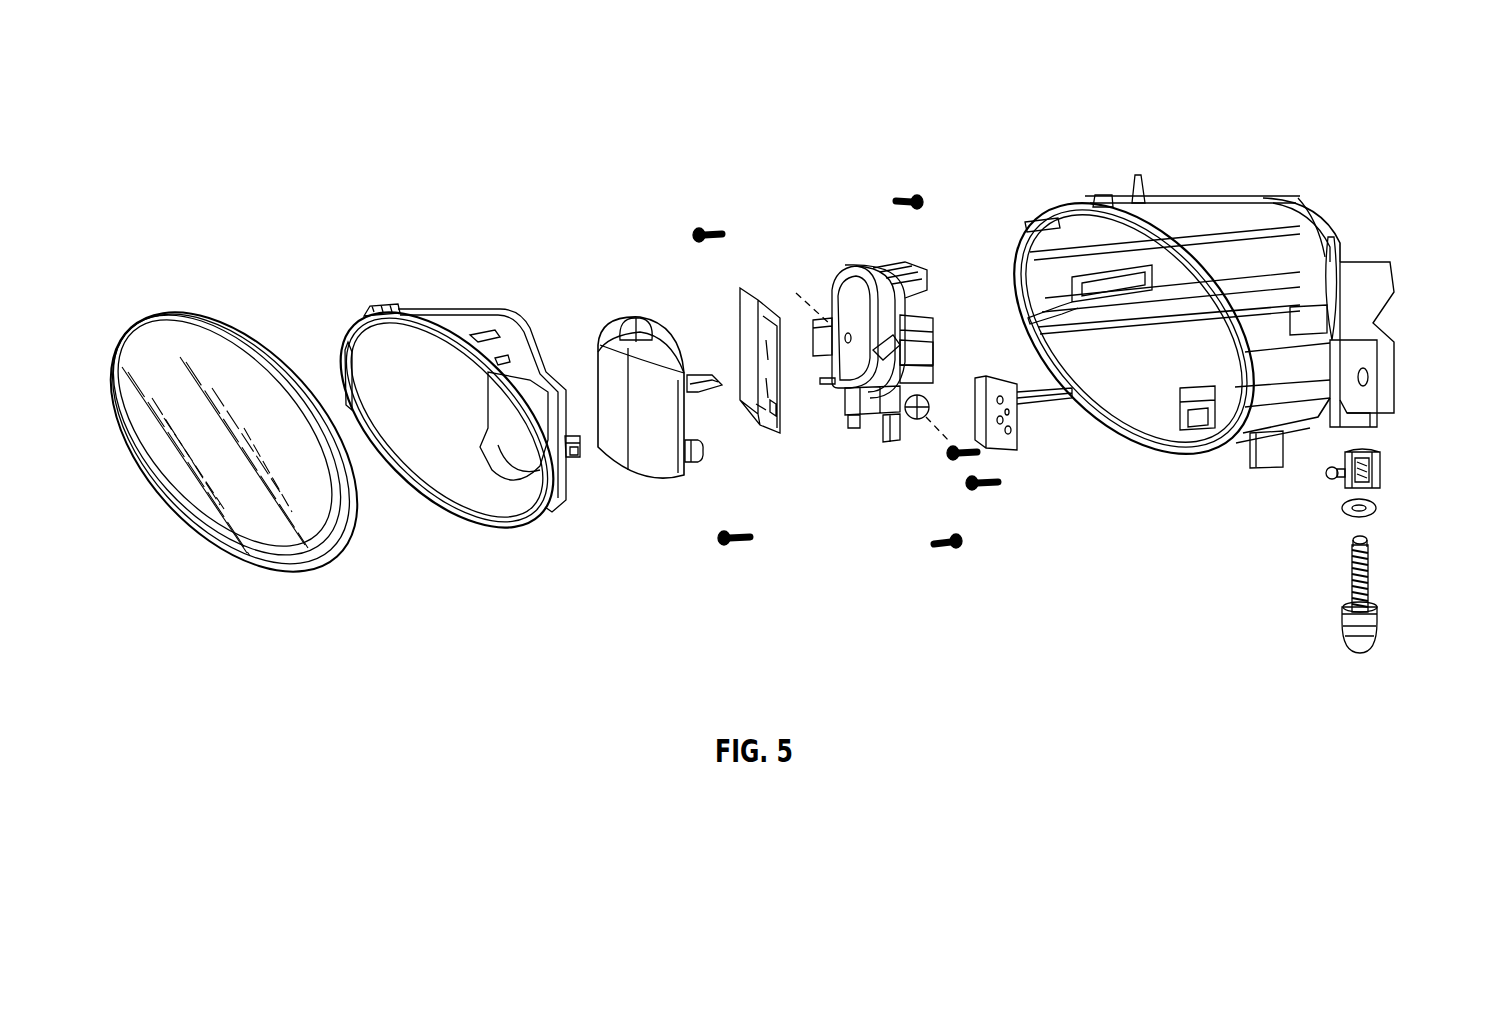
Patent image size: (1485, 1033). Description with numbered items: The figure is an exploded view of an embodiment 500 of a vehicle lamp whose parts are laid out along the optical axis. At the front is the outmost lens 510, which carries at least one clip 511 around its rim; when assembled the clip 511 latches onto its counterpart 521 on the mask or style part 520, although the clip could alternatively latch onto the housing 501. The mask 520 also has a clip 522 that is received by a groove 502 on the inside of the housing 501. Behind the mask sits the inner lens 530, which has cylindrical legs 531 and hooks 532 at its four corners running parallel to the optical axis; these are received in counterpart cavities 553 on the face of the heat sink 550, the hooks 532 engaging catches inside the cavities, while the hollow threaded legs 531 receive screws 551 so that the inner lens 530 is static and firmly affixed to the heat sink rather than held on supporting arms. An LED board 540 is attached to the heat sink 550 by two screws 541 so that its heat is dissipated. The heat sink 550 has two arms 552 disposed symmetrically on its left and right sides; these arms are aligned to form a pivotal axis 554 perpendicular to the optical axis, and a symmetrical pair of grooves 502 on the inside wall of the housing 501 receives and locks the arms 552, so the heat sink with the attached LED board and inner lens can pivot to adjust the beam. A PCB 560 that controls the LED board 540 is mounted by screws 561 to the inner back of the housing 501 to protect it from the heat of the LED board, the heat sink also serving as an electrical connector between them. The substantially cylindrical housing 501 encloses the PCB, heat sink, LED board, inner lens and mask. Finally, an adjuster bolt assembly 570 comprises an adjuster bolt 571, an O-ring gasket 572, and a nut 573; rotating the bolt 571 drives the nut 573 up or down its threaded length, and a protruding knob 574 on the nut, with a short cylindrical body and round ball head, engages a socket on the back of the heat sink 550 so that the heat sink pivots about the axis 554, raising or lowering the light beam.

The embodiment 500 is at (253, 97).
The housing 501 is at (1202, 192).
The groove 502 is at (1105, 292).
The outmost lens 510 is at (160, 485).
The clip 511 is at (176, 318).
The mask or style part 520 is at (462, 315).
The counterpart 521 is at (378, 304).
The clip 522 is at (576, 462).
The inner lens 530 is at (606, 324).
The cylindrical legs 531 is at (646, 328).
The hooks 532 is at (698, 373).
The LED board 540 is at (752, 290).
The screws 541 is at (714, 232).
The heat sink 550 is at (866, 422).
The screws 551 is at (910, 200).
The arms 552 is at (930, 362).
The cavities 553 is at (880, 348).
The pivotal axis 554 is at (803, 296).
The PCB 560 is at (1040, 410).
The screws 561 is at (996, 492).
The adjuster bolt assembly 570 is at (1348, 570).
The adjuster bolt 571 is at (1380, 640).
The O-ring gasket 572 is at (1340, 510).
The nut 573 is at (1382, 470).
The protruding knob 574 is at (1326, 478).